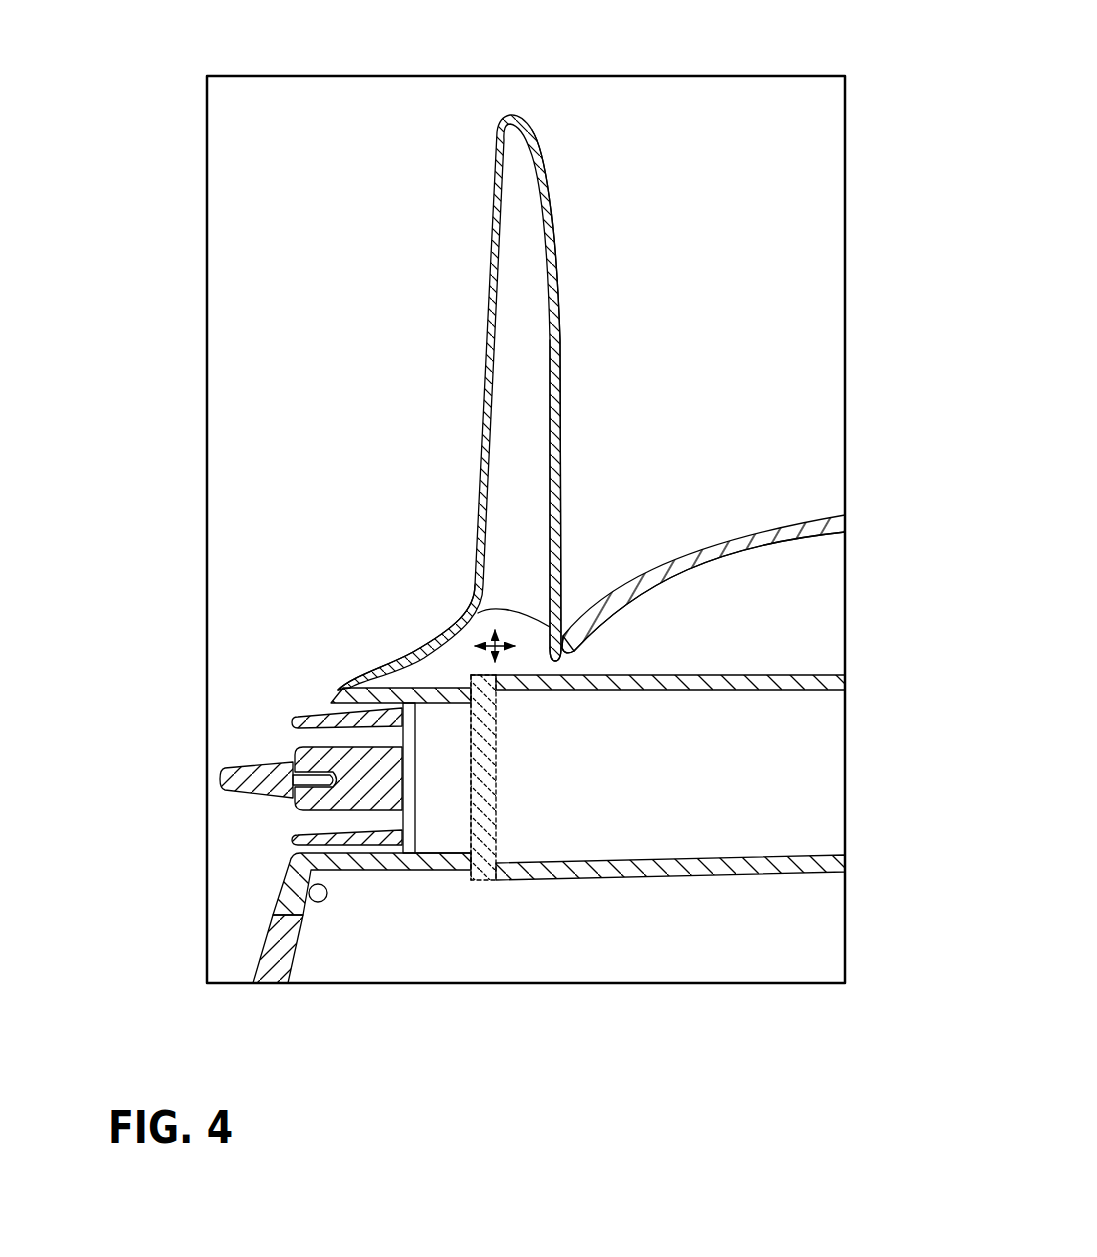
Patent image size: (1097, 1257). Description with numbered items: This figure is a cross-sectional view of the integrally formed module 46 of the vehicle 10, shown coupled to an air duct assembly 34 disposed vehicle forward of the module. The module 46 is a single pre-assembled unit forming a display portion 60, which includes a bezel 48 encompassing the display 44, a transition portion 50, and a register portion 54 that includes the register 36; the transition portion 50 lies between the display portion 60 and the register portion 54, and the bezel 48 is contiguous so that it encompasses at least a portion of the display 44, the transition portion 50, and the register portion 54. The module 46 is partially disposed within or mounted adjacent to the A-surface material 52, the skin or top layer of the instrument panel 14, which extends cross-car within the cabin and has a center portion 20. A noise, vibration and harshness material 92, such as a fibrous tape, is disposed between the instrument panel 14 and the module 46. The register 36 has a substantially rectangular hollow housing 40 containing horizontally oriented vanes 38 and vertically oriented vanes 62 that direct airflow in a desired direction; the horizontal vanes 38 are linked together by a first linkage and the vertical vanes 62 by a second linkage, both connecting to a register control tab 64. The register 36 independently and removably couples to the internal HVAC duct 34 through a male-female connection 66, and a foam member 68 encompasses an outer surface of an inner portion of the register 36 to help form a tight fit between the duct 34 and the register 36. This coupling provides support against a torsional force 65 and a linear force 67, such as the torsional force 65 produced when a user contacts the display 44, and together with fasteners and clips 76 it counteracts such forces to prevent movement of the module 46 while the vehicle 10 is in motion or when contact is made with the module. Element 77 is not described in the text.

The vehicle 10 is at (590, 64).
The instrument panel 14 is at (800, 519).
The center portion 20 is at (300, 655).
The air duct assembly 34 is at (764, 858).
The register 36 is at (269, 812).
The horizontally oriented vanes 38 is at (355, 837).
The register housing 40 is at (379, 855).
The display 44 is at (514, 354).
The module 46 is at (565, 346).
The bezel 48 is at (558, 276).
The transition portion 50 is at (442, 620).
The A-surface material 52 is at (747, 557).
The register portion 54 is at (277, 727).
The display portion 60 is at (534, 466).
The vertically oriented vanes 62 is at (414, 853).
The register control tab 64 is at (237, 782).
The torsional force 65 is at (437, 910).
The male-female connection 66 is at (487, 886).
The linear force 67 is at (493, 648).
The foam member 68 is at (483, 828).
The clips 76 is at (565, 648).
The bead 77 is at (311, 903).
The NVH material 92 is at (563, 638).